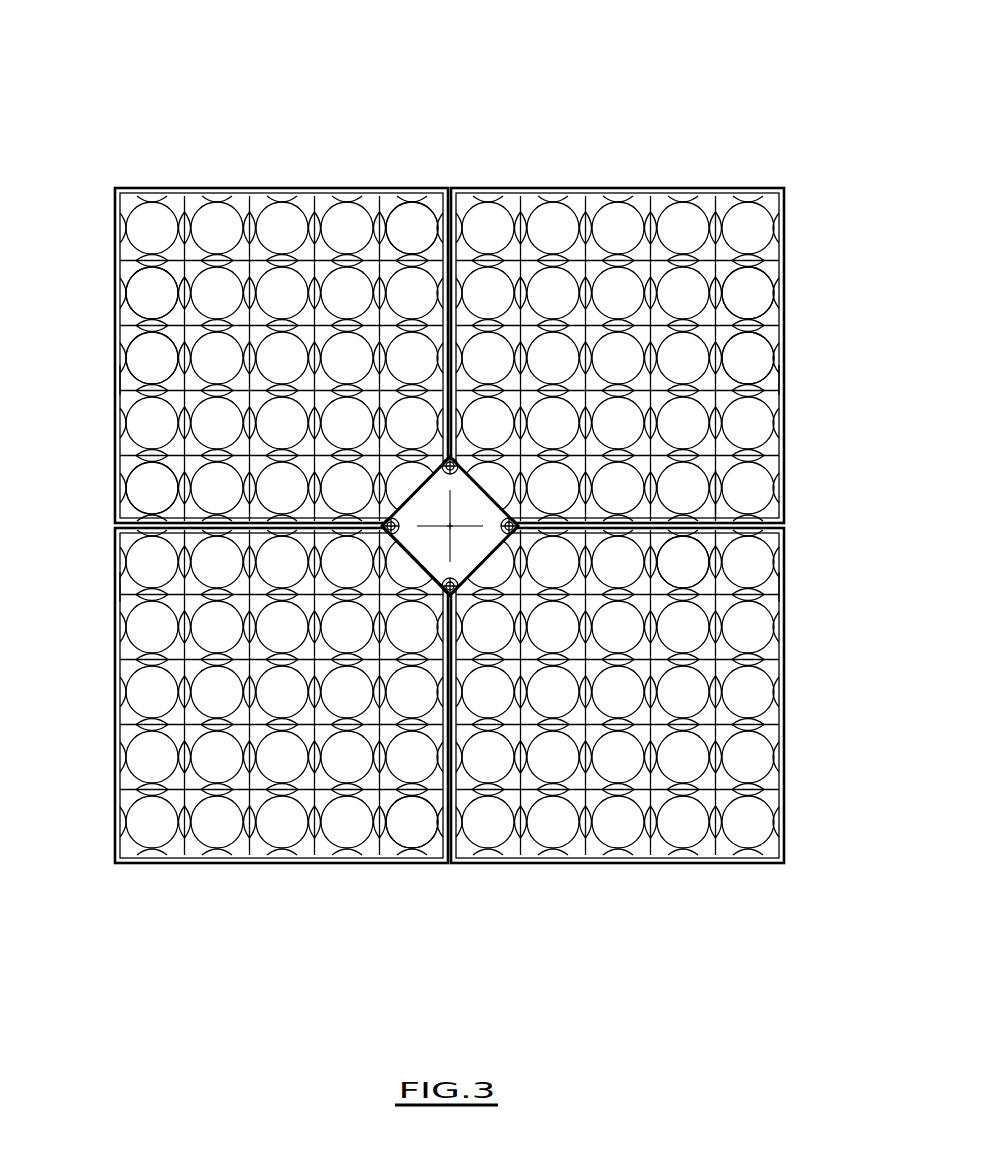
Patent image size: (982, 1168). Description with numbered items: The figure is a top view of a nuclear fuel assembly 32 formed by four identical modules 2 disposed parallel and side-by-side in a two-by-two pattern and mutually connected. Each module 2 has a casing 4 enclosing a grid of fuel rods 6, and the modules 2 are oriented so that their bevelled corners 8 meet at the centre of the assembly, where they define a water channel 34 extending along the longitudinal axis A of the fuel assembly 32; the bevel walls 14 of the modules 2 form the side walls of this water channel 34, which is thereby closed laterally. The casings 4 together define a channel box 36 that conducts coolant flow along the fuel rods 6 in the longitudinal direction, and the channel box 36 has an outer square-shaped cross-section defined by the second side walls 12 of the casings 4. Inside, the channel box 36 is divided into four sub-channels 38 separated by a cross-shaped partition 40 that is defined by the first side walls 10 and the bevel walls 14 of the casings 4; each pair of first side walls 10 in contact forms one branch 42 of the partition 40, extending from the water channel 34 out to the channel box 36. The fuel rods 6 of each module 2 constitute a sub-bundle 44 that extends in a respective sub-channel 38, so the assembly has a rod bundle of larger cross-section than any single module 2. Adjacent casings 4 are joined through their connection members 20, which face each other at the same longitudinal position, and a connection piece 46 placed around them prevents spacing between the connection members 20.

The module 2 is at (270, 148).
The casing 4 is at (312, 186).
The fuel rod 6 is at (138, 347).
The bevelled corner 8 is at (418, 546).
The first side wall 10 is at (452, 227).
The second side wall 12 is at (207, 190).
The bevel wall 14 is at (403, 550).
The connection member 20 is at (508, 518).
The nuclear fuel assembly 32 is at (492, 118).
The water channel 34 is at (487, 514).
The channel box 36 is at (750, 869).
The sub-channel 38 is at (127, 380).
The cross-shaped partition 40 is at (440, 240).
The branch 42 is at (707, 505).
The sub-bundle 44 is at (153, 186).
The connection piece 46 is at (447, 466).
The longitudinal axis A is at (451, 528).